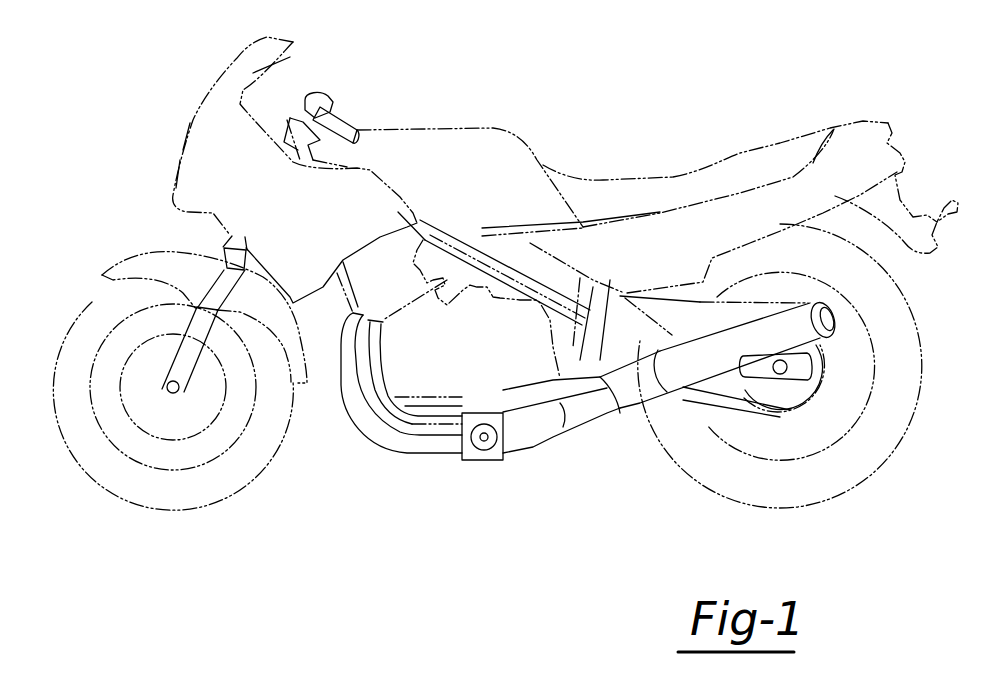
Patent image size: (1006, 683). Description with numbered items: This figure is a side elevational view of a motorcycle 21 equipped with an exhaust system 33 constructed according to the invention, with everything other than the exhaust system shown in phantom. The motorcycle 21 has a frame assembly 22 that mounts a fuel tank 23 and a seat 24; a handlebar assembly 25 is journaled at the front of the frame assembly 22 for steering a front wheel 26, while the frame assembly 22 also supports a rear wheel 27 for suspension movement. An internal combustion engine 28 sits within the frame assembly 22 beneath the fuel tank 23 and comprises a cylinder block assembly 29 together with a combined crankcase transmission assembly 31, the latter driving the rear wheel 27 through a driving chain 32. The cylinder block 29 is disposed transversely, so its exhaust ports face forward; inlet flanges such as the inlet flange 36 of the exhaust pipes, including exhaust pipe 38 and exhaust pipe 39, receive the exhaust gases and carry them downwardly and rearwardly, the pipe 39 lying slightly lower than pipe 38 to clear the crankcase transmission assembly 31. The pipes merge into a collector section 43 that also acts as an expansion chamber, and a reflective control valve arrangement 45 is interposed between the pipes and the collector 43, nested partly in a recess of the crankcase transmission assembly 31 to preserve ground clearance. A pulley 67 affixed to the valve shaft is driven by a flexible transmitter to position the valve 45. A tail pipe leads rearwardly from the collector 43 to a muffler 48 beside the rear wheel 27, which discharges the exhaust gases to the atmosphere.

The motorcycle 21 is at (573, 140).
The frame assembly 22 is at (468, 281).
The fuel tank 23 is at (470, 127).
The seat 24 is at (740, 153).
The handlebar assembly 25 is at (350, 118).
The front wheel 26 is at (65, 343).
The rear wheel 27 is at (918, 338).
The internal combustion engine 28 is at (520, 140).
The cylinder block assembly 29 is at (415, 343).
The crankcase transmission assembly 31 is at (360, 427).
The driving chain 32 is at (777, 415).
The exhaust system 33 is at (368, 451).
The inlet flange 36 is at (479, 441).
The exhaust pipe 38 is at (428, 430).
The exhaust pipe 39 is at (392, 452).
The collector section 43 is at (545, 455).
The reflective control valve arrangement 45 is at (480, 464).
The muffler 48 is at (700, 385).
The pulley 67 is at (488, 448).